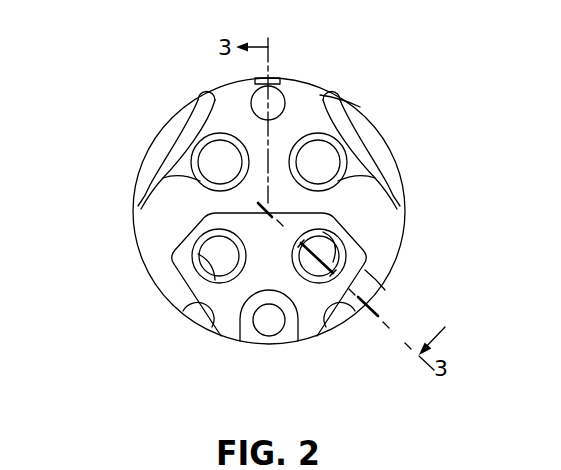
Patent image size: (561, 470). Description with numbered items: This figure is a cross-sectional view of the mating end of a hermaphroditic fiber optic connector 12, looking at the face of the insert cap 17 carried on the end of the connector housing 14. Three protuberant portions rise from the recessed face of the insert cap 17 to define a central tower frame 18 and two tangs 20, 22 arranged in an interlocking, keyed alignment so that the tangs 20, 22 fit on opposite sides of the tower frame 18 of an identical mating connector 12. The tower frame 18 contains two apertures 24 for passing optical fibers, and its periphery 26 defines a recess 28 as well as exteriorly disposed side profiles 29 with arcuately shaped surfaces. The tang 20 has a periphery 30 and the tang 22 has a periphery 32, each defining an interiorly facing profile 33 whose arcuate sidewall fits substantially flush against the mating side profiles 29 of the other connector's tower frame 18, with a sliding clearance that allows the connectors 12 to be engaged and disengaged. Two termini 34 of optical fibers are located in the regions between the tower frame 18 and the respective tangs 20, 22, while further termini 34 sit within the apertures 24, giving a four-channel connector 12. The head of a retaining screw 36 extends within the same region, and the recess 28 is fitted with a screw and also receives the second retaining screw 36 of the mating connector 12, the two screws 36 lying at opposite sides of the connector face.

The fiber optic connector 12 is at (126, 236).
The connector housing 14 is at (341, 98).
The insert cap 17 is at (226, 97).
The tower frame 18 is at (221, 327).
The tang 20 is at (168, 133).
The tang 22 is at (375, 140).
The aperture 24 is at (205, 258).
The periphery 26 is at (378, 283).
The recess 28 is at (244, 340).
The exteriorly disposed side profile 29 is at (186, 312).
The periphery 30 is at (170, 188).
The periphery 32 is at (370, 187).
The interiorly facing profile 33 is at (269, 162).
The terminus 34 is at (228, 138).
The retaining screw 36 is at (278, 96).